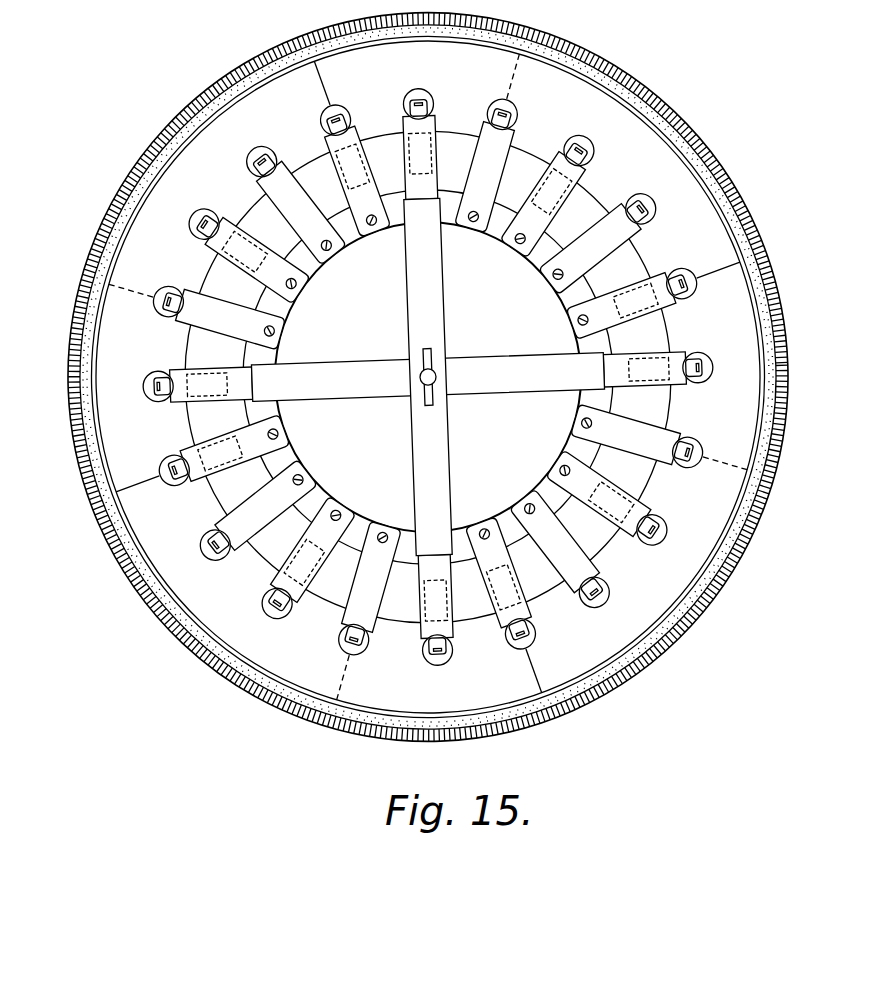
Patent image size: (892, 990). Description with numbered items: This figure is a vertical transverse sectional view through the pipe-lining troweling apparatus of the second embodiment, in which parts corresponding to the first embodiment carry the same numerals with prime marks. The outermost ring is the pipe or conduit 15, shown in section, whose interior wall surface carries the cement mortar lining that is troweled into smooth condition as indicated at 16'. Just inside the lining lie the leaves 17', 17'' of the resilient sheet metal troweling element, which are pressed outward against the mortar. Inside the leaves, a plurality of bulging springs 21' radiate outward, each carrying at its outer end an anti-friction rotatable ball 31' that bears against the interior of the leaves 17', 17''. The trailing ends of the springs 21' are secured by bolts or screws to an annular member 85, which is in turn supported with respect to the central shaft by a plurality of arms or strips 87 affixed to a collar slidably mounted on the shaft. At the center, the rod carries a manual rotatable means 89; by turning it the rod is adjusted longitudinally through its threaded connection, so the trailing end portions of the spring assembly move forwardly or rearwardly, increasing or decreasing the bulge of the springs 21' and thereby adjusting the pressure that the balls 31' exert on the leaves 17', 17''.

The pipe or conduit 15 is at (428, 376).
The troweled cement mortar lining 16' is at (428, 377).
The leaf of troweling element 17' is at (428, 377).
The leaf of troweling element 17'' is at (427, 377).
The spring 21' is at (428, 377).
The anti-friction rotatable ball 31' is at (428, 377).
The annular member 85 is at (428, 377).
The arm or strip 87 is at (428, 377).
The manual rotatable means 89 is at (428, 376).